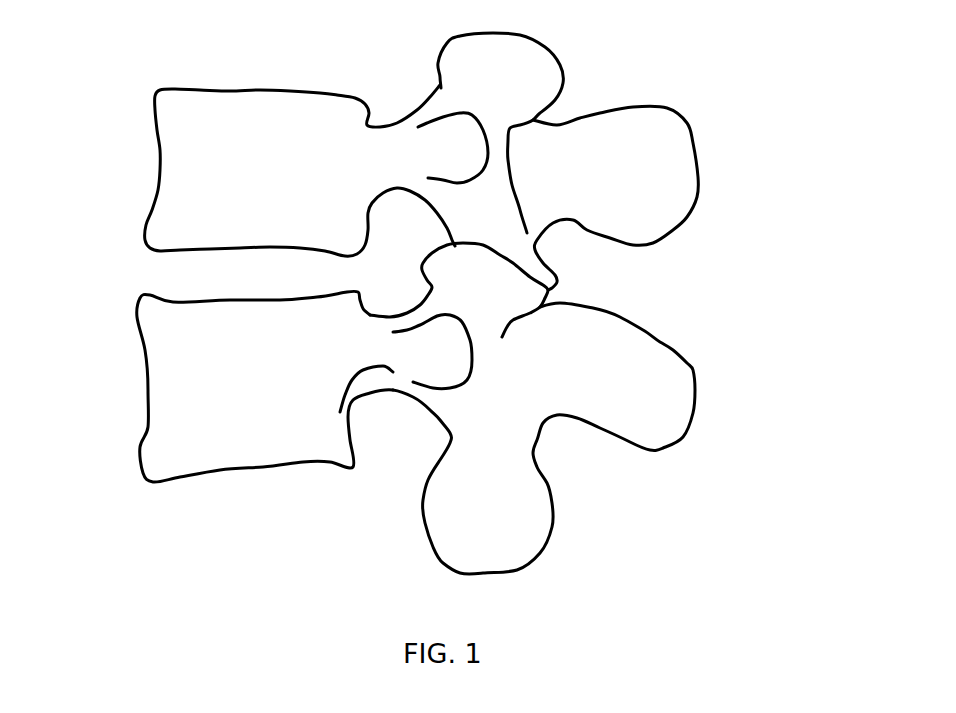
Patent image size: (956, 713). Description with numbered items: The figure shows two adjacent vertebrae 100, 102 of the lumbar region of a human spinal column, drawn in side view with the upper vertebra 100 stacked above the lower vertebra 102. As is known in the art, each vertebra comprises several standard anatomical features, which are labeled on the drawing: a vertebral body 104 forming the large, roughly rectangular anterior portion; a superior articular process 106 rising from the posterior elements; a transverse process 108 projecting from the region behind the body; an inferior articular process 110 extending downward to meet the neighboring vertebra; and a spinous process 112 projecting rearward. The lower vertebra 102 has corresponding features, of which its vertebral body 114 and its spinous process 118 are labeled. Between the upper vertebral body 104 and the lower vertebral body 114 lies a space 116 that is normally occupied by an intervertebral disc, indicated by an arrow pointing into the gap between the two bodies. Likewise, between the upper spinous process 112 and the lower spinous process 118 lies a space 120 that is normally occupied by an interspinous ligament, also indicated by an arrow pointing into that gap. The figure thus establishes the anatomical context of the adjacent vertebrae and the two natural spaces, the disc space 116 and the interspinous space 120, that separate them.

The vertebra 100 is at (437, 155).
The vertebra 102 is at (492, 432).
The vertebral body 104 is at (187, 152).
The superior articular process 106 is at (537, 63).
The transverse process 108 is at (458, 137).
The inferior articular process 110 is at (533, 268).
The spinous process 112 is at (638, 133).
The vertebral body 114 is at (195, 450).
The space 116 is at (144, 275).
The spinous process 118 is at (657, 415).
The space 120 is at (670, 288).